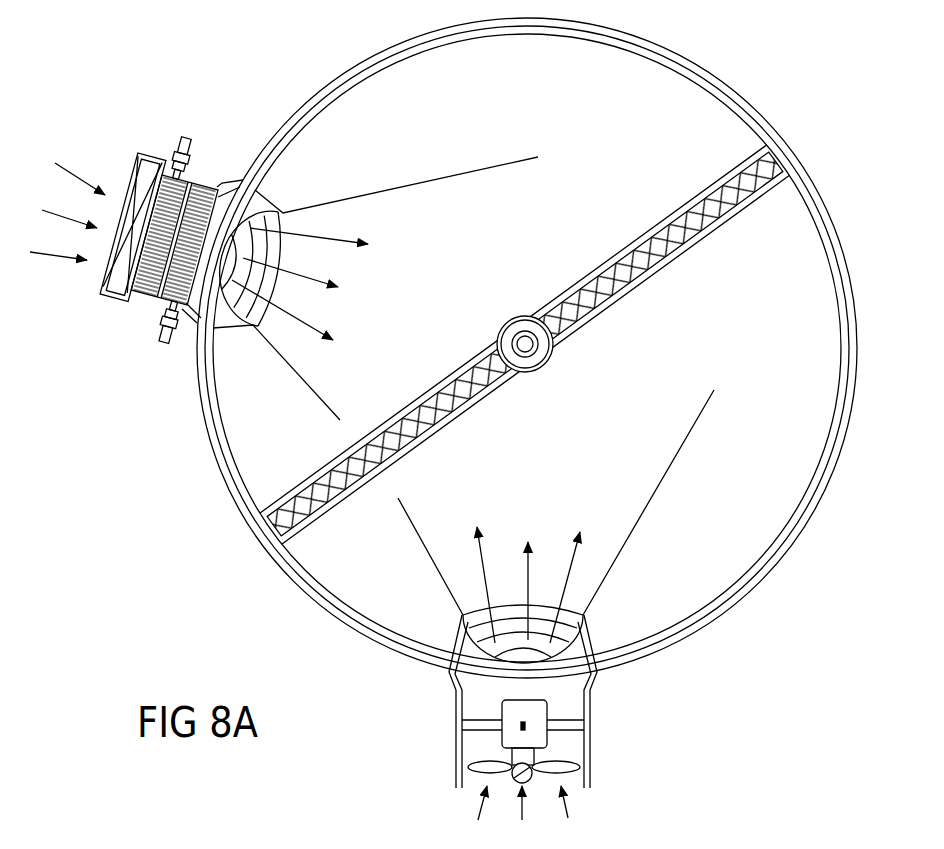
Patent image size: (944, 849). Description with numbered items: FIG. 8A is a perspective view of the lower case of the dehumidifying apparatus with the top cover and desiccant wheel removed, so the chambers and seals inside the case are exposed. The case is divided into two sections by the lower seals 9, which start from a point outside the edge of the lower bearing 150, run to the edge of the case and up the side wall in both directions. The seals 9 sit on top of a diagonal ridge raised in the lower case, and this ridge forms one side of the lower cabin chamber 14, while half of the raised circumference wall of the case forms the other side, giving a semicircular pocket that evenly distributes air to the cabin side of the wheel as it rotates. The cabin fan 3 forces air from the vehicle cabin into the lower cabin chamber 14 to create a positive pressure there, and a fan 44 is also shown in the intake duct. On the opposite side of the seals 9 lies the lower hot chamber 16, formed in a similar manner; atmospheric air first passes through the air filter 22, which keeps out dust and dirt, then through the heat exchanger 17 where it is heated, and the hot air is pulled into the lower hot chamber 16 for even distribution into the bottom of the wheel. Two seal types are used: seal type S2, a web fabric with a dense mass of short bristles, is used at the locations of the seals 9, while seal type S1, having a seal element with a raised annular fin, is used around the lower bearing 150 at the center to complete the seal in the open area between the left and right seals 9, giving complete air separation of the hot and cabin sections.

The lower hot chamber 16 is at (340, 125).
The air filter 22 is at (148, 170).
The heat exchanger 17 is at (138, 300).
The brush seal 9 is at (703, 192).
The lower bearing 150 is at (543, 357).
The lower cabin chamber 14 is at (713, 567).
The cabin fan 3 is at (538, 722).
The fan 44 is at (590, 760).
The seal S1 is at (843, 363).
The seal S2 is at (825, 477).